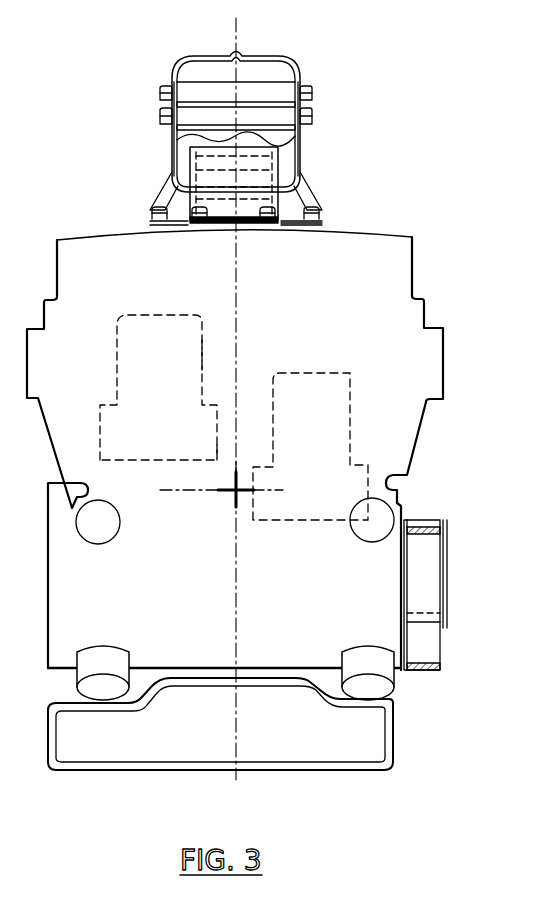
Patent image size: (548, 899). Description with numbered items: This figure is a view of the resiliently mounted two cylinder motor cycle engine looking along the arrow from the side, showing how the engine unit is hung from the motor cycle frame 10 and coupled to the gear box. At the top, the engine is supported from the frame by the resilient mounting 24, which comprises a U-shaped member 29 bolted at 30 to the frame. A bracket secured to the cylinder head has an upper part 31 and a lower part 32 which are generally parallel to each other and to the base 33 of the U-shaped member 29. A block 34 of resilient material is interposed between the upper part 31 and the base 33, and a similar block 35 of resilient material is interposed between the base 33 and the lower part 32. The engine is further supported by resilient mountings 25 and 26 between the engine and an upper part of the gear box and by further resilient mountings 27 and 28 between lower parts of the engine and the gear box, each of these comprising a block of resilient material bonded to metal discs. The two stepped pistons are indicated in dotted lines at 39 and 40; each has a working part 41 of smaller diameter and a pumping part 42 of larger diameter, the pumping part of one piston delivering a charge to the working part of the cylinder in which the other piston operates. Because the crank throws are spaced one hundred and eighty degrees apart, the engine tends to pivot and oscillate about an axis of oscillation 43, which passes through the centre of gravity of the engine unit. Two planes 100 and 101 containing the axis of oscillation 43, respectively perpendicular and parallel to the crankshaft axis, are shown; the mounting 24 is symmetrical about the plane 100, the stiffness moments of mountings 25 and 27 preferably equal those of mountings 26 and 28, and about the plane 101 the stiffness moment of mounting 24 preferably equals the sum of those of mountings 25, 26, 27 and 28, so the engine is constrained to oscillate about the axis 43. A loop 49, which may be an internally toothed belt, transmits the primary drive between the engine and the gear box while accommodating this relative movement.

The motor cycle frame 10 is at (284, 63).
The resilient mounting 24 is at (322, 122).
The resilient mounting 25 is at (375, 536).
The resilient mounting 26 is at (98, 522).
The resilient mounting 27 is at (366, 652).
The resilient mounting 28 is at (113, 650).
The U-shaped member 29 is at (300, 138).
The bolts 30 is at (313, 112).
The upper part of bracket 31 is at (282, 150).
The lower part of bracket 32 is at (259, 226).
The base of U-shaped member 33 is at (305, 197).
The block of resilient material 34 is at (245, 131).
The block of resilient material 35 is at (288, 227).
The stepped piston 39 is at (186, 392).
The stepped piston 40 is at (289, 420).
The working part of piston 41 is at (203, 353).
The pumping part of piston 42 is at (212, 453).
The axis of oscillation 43 is at (233, 498).
The loop 49 is at (432, 672).
The plane 100 is at (240, 458).
The plane 101 is at (203, 498).